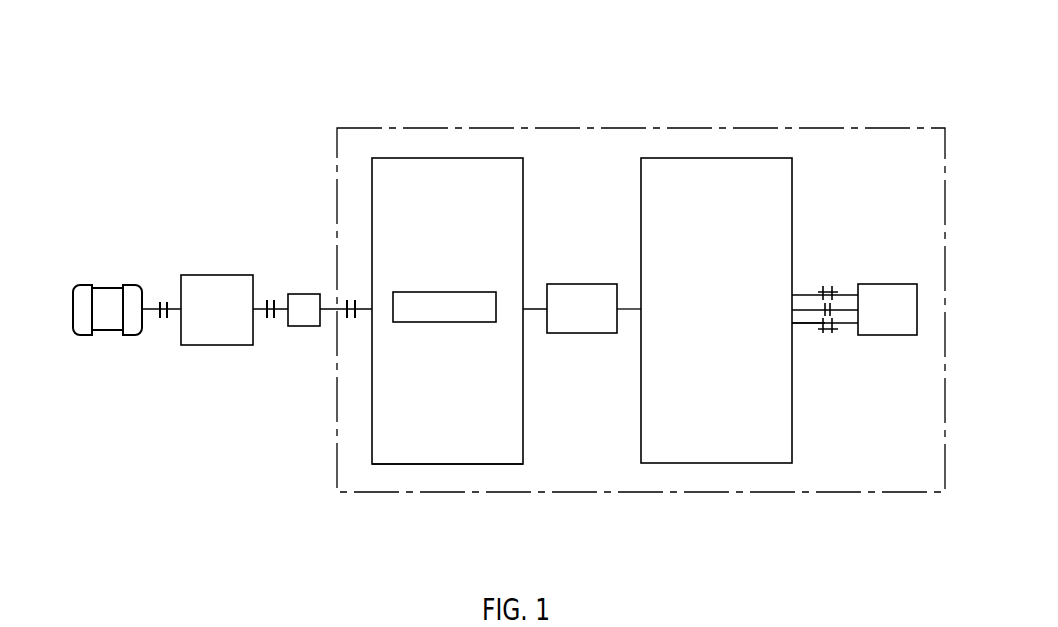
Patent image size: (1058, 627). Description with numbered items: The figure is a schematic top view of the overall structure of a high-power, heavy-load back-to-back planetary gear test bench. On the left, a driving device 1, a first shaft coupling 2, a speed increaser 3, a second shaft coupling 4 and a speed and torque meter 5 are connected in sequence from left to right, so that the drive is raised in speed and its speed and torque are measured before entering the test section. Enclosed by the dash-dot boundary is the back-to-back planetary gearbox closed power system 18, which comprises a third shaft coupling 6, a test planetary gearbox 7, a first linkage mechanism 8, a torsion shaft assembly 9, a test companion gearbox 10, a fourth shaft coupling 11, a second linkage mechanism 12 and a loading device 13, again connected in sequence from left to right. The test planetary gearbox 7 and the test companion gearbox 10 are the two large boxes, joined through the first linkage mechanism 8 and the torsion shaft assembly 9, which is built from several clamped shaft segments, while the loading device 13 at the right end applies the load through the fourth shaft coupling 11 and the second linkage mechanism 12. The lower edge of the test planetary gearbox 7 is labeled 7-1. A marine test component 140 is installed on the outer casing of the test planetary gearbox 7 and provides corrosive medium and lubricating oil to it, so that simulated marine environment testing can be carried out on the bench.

The driving device 1 is at (115, 298).
The first shaft coupling 2 is at (167, 313).
The speed increaser 3 is at (217, 280).
The second shaft coupling 4 is at (270, 313).
The speed and torque meter 5 is at (307, 297).
The third shaft coupling 6 is at (350, 313).
The test planetary gearbox 7 is at (437, 173).
The housing base 7-1 is at (500, 464).
The first linkage mechanism 8 is at (578, 293).
The torsion shaft assembly 9 is at (637, 310).
The test companion gearbox 10 is at (702, 175).
The fourth shaft coupling 11 is at (826, 322).
The second linkage mechanism 12 is at (833, 290).
The loading device 13 is at (907, 317).
The back-to-back planetary gearbox closed power system 18 is at (337, 465).
The marine test component 140 is at (477, 317).